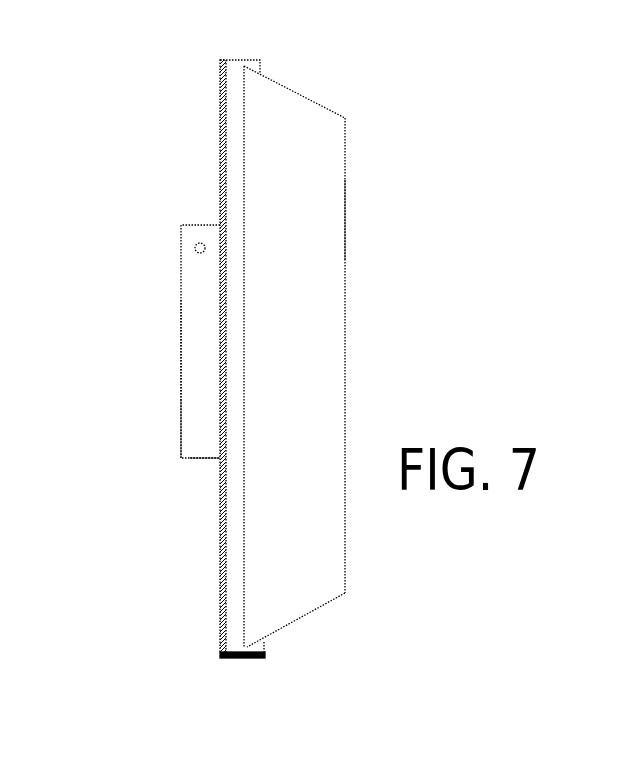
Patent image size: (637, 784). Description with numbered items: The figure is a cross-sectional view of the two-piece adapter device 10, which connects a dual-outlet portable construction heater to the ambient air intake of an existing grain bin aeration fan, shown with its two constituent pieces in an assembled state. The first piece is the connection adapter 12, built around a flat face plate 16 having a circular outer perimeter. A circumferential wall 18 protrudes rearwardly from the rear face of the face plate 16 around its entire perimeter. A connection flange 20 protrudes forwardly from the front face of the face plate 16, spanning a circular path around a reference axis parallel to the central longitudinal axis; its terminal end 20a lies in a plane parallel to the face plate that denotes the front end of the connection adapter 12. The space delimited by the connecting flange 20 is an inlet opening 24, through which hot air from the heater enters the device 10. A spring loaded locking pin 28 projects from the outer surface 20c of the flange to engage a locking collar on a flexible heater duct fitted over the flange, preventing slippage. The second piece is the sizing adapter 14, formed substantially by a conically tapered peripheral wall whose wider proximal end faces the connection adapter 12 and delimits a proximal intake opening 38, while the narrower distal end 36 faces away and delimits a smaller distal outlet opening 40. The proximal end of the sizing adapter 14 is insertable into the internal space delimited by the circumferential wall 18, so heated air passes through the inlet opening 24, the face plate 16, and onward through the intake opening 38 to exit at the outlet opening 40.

The two-piece adapter device 10 is at (135, 117).
The connection adapter 12 is at (218, 60).
The sizing adapter 14 is at (363, 125).
The face plate 16 is at (222, 577).
The circumferential wall 18 is at (243, 660).
The connection flange 20 is at (203, 395).
The terminal end of connection flange 20a is at (180, 430).
The outer surface of connection flange 20c is at (205, 435).
The inlet opening 24 is at (178, 356).
The spring loaded locking pin 28 is at (196, 250).
The distal end 36 is at (345, 308).
The proximal intake opening 38 is at (245, 440).
The distal outlet opening 40 is at (343, 218).